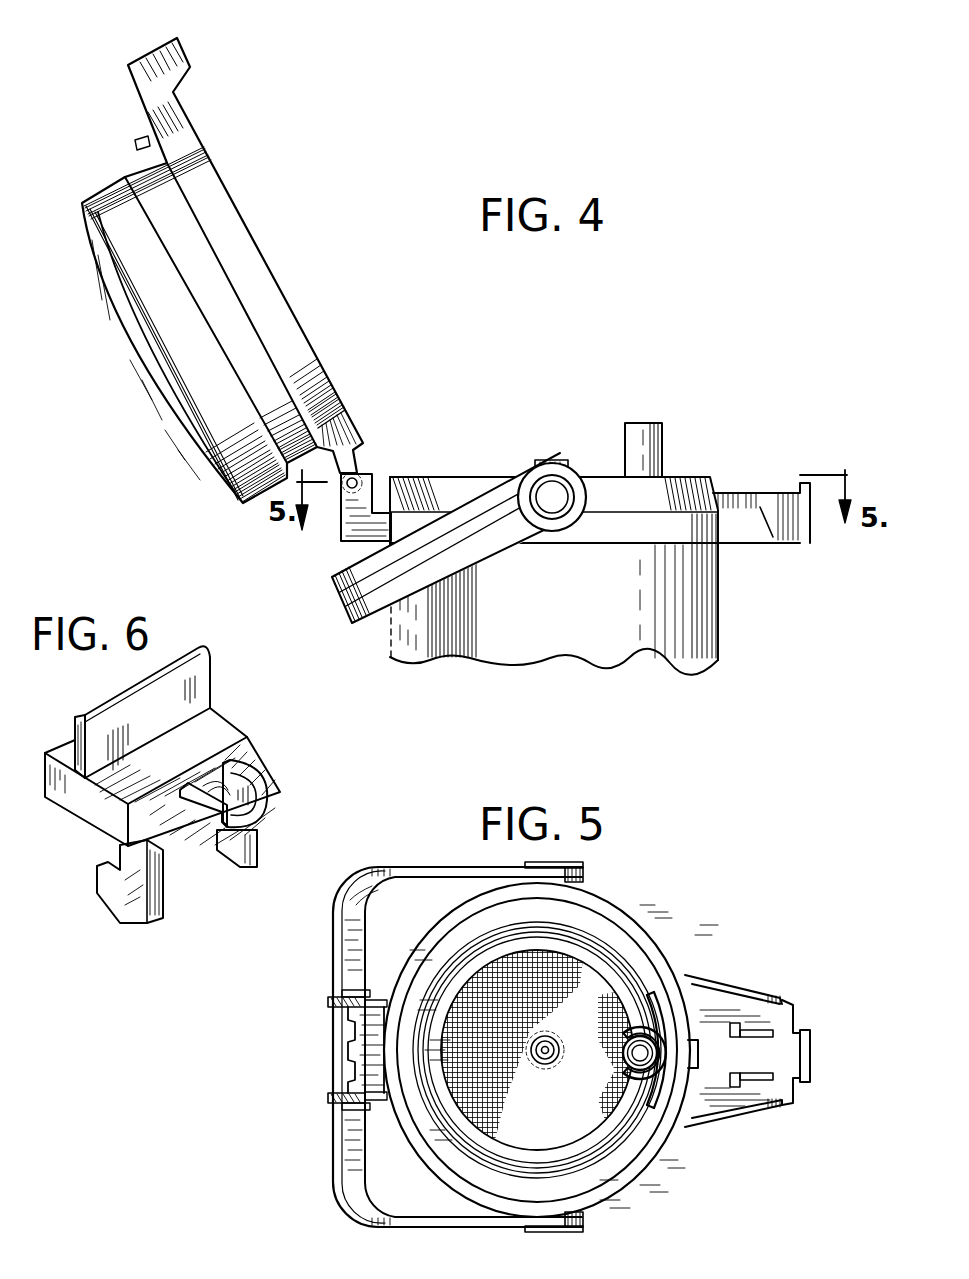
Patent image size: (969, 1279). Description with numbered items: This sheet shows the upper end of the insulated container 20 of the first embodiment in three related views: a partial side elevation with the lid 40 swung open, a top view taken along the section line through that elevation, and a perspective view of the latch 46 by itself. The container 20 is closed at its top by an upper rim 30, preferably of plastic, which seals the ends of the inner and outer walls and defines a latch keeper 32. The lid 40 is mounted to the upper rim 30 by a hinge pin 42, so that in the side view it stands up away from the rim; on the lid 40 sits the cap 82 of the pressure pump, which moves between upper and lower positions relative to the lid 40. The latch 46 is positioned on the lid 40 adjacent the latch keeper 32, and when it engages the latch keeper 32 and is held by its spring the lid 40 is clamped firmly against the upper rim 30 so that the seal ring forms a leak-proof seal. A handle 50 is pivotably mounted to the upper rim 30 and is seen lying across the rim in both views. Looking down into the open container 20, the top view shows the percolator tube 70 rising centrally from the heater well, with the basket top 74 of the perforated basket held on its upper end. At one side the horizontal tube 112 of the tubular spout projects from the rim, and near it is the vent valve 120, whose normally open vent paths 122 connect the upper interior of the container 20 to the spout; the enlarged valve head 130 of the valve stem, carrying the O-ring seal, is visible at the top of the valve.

In FIG. 4, the container 20 is at (707, 628).
In FIG. 4, the upper rim 30 is at (685, 528).
In FIG. 5, the upper rim 30 is at (642, 945).
In FIG. 5, the latch keeper 32 is at (733, 1028).
In FIG. 4, the lid 40 is at (287, 293).
In FIG. 4, the hinge pin 42 is at (360, 472).
In FIG. 5, the hinge pin 42 is at (352, 985).
In FIG. 6, the latch 46 is at (72, 815).
In FIG. 4, the handle 50 is at (346, 615).
In FIG. 5, the handle 50 is at (388, 866).
In FIG. 5, the percolator tube 70 is at (546, 1036).
In FIG. 5, the basket top 74 is at (540, 1050).
In FIG. 4, the cap 82 is at (202, 457).
In FIG. 4, the horizontal tube 112 is at (760, 497).
In FIG. 5, the horizontal tube 112 is at (803, 1035).
In FIG. 4, the vent valve 120 is at (663, 438).
In FIG. 5, the vent valve 120 is at (622, 1032).
In FIG. 5, the vent paths 122 is at (622, 1062).
In FIG. 5, the valve head 130 is at (639, 1050).